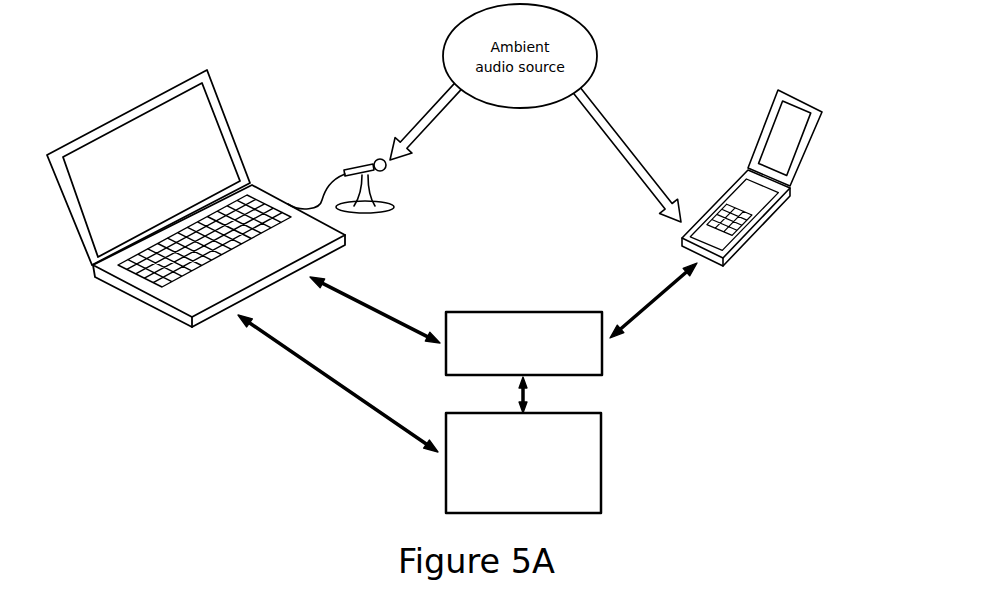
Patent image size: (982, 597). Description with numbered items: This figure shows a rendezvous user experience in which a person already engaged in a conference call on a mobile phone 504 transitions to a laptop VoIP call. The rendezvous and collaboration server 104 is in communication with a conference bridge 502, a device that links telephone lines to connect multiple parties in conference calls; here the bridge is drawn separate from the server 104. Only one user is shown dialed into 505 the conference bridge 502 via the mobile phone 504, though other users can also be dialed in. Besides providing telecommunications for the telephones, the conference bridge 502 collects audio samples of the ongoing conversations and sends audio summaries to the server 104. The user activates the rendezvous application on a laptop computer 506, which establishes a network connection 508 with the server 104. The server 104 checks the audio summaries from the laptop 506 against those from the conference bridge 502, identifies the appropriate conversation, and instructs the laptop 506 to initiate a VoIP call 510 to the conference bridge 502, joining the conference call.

The laptop computer 506 is at (250, 70).
The mobile phone 504 is at (780, 253).
The dialed into connection 505 is at (650, 297).
The conference bridge 502 is at (602, 355).
The VoIP call 510 is at (377, 312).
The network connection 508 is at (340, 392).
The rendezvous and collaboration server 104 is at (601, 462).